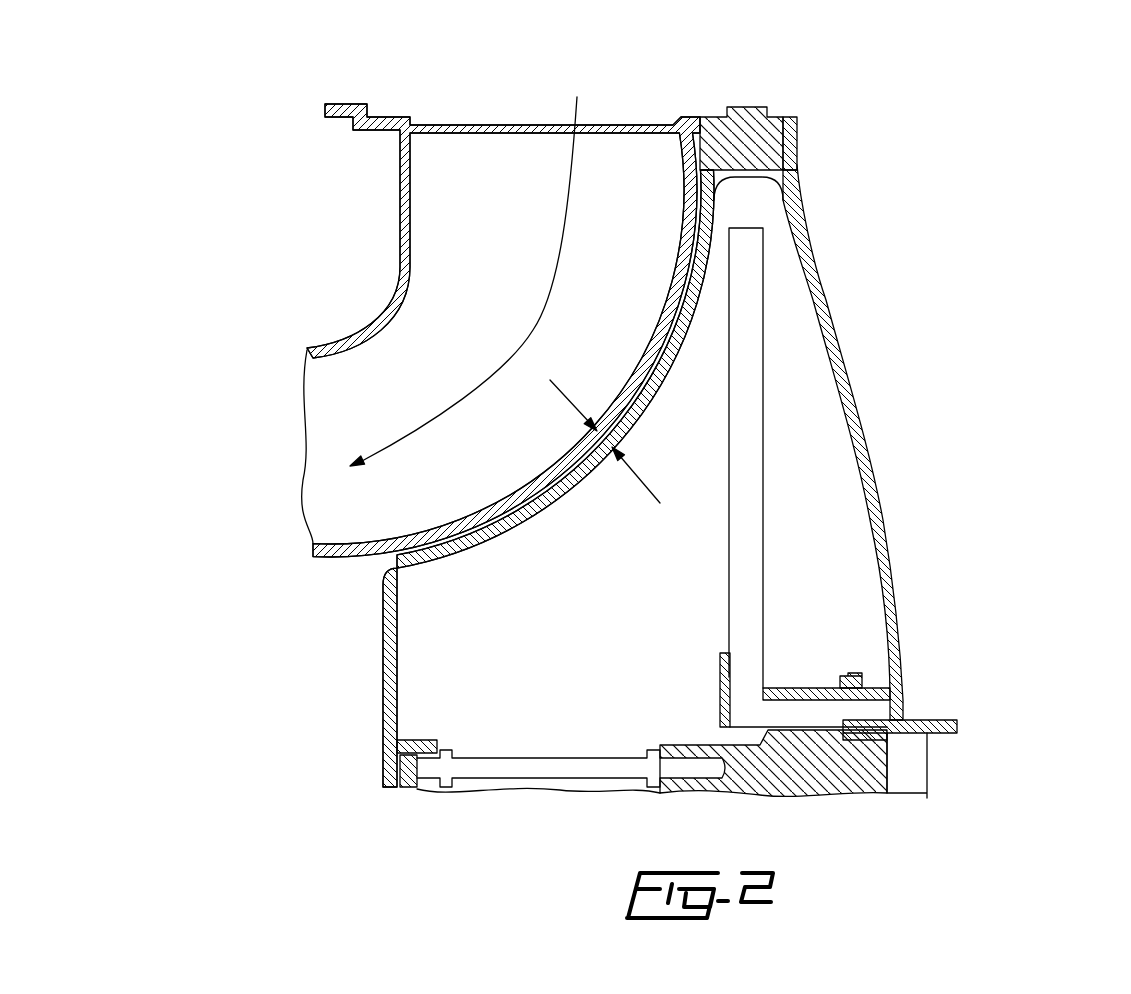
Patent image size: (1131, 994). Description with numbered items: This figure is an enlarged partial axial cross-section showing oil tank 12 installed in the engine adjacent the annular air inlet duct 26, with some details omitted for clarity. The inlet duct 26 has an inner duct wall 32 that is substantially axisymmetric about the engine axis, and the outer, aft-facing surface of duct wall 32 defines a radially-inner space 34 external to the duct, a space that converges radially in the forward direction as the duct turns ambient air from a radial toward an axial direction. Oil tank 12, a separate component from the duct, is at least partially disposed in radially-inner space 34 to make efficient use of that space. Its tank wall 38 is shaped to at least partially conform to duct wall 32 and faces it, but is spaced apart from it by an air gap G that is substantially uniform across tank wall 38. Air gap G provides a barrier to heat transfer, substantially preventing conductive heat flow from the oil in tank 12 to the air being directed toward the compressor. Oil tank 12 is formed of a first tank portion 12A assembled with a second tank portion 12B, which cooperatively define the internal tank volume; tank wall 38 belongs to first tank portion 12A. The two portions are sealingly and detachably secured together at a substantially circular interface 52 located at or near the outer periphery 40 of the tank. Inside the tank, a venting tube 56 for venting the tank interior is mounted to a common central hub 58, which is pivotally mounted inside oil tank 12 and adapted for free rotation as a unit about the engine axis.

The oil tank 12 is at (640, 646).
The first tank portion 12A is at (377, 673).
The second tank portion 12B is at (910, 538).
The annular air inlet duct 26 is at (475, 281).
The inner duct wall 32 is at (540, 480).
The radially-inner space 34 is at (313, 647).
The tank wall 38 is at (563, 510).
The outer periphery 40 is at (825, 115).
The interface 52 is at (812, 133).
The venting tube 56 is at (748, 272).
The central hub 58 is at (833, 675).
The air gap G is at (596, 441).